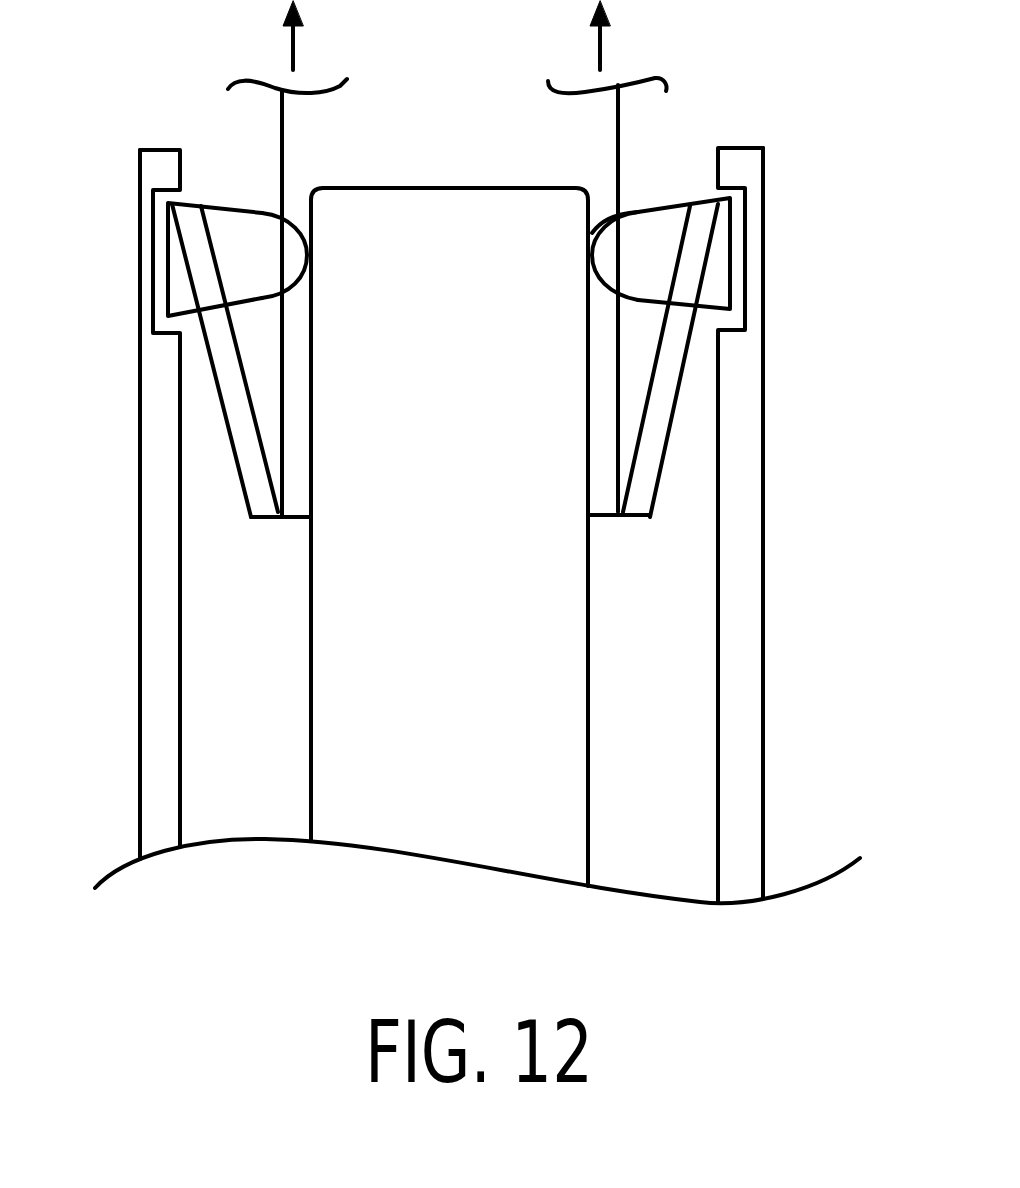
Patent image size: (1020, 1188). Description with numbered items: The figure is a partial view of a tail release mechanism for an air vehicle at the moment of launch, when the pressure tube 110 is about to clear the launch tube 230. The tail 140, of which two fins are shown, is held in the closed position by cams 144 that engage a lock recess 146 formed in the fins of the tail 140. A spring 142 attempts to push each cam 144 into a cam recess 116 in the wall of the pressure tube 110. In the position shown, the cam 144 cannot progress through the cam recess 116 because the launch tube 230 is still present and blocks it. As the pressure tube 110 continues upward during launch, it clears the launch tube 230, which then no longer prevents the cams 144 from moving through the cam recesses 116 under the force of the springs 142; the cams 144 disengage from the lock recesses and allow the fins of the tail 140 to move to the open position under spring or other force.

The pressure tube 110 is at (606, 123).
The cam recess 116 is at (603, 227).
The tail 140 is at (155, 606).
The spring 142 is at (690, 354).
The cam 144 is at (665, 245).
The lock recess 146 is at (698, 308).
The launch tube 230 is at (577, 779).